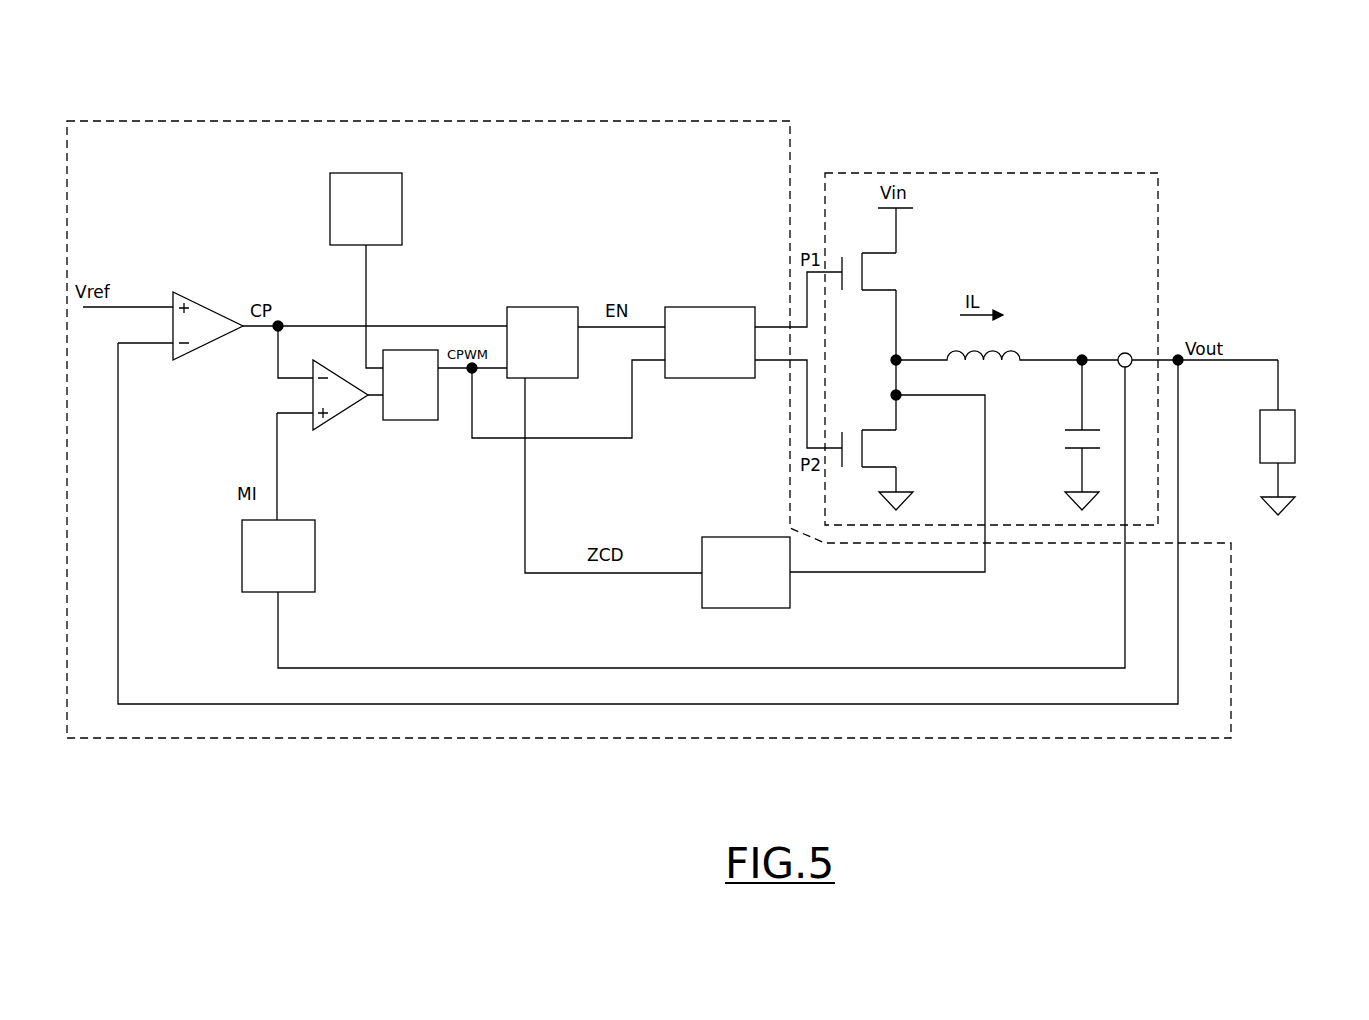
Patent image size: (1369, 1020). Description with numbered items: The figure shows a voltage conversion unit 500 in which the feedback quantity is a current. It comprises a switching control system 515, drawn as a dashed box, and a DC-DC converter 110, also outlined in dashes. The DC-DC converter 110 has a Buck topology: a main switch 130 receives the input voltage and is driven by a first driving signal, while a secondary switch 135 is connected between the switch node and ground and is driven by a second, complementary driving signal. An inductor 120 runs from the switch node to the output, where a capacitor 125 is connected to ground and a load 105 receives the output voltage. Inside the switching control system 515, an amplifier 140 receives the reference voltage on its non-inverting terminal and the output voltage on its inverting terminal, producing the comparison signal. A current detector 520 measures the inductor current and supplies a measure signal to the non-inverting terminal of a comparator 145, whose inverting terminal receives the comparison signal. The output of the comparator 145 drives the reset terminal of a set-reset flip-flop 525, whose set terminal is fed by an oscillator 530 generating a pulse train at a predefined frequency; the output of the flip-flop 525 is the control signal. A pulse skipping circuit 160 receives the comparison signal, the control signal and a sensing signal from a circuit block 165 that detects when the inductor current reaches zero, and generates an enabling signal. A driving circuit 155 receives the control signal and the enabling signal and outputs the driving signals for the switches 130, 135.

The switching control system 515 is at (367, 120).
The DC-DC converter 110 is at (1127, 172).
The amplifier 140 is at (226, 300).
The oscillator 530 is at (402, 180).
The comparator 145 is at (340, 432).
The set-reset flip-flop 525 is at (412, 422).
The current detector 520 is at (315, 562).
The pulse skipping circuit 160 is at (545, 305).
The driving circuit 155 is at (705, 305).
The circuit block 165 is at (727, 535).
The main switch 130 is at (900, 272).
The secondary switch 135 is at (893, 450).
The inductor 120 is at (1020, 344).
The capacitor 125 is at (1060, 440).
The load 105 is at (1300, 437).
The voltage conversion unit 500 is at (117, 815).